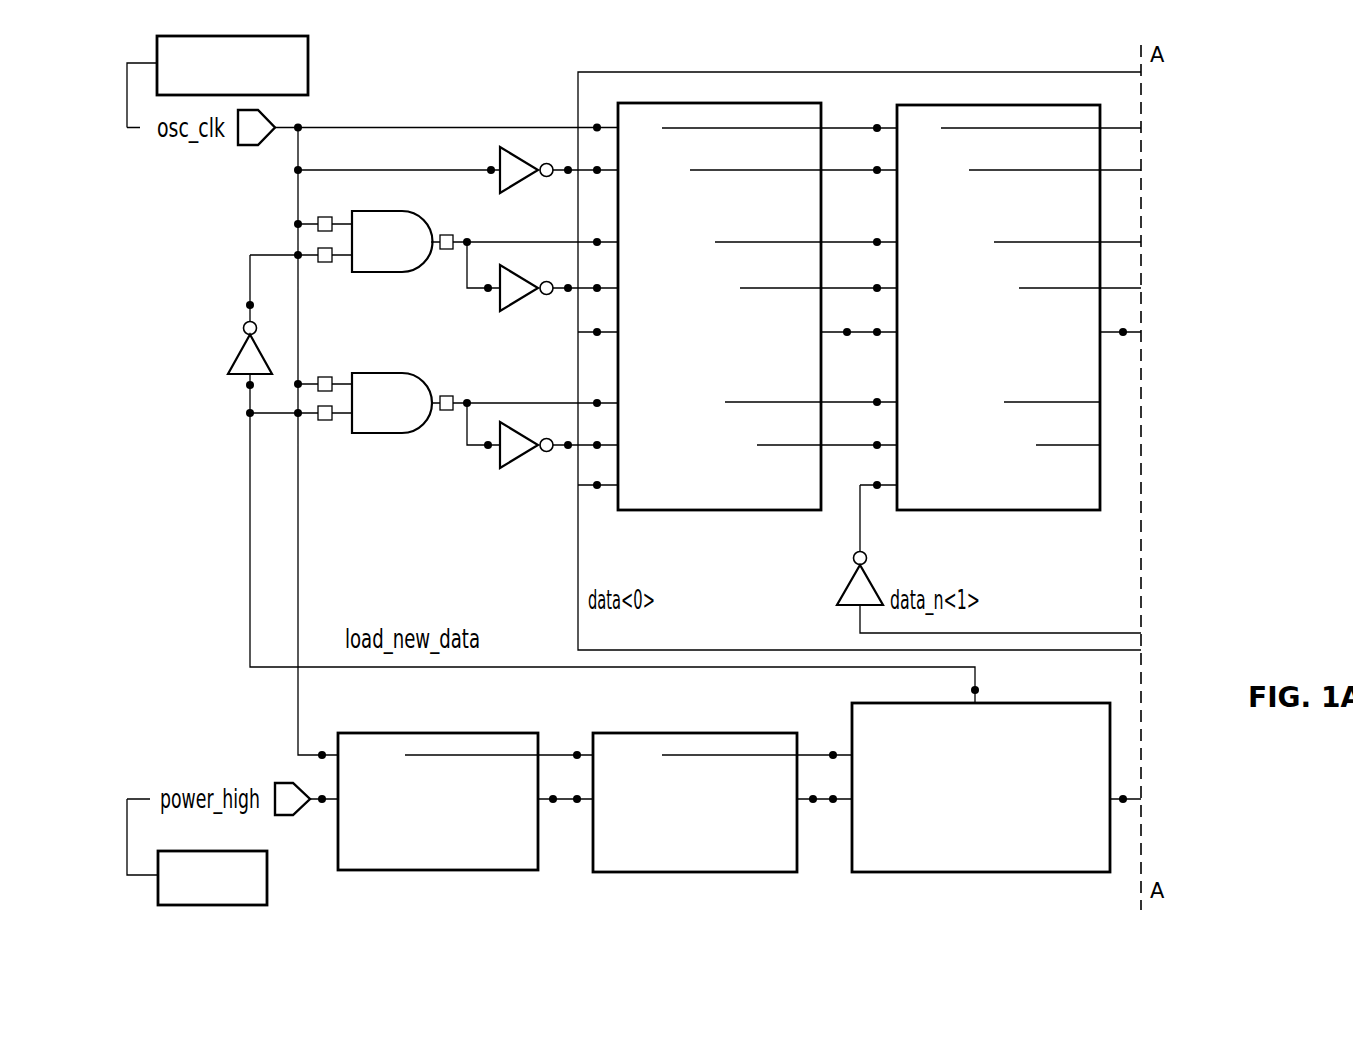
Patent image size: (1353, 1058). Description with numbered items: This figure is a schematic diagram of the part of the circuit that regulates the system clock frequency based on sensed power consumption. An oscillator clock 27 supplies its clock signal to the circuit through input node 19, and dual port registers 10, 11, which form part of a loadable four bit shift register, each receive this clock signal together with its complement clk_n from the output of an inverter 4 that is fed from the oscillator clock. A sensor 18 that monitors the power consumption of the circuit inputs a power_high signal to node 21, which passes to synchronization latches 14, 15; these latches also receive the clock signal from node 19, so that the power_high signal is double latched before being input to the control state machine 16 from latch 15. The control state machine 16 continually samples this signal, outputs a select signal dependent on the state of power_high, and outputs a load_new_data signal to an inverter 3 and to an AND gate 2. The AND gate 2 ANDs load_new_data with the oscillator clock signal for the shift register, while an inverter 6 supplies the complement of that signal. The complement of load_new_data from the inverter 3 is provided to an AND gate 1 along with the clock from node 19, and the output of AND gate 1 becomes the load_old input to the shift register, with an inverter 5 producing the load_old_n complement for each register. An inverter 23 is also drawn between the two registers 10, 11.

The AND gate 1 is at (385, 241).
The AND gate 2 is at (385, 403).
The inverter 3 is at (262, 356).
The inverter 4 is at (518, 186).
The inverter 5 is at (518, 304).
The inverter 6 is at (518, 461).
The dual port register 10 is at (719, 330).
The dual port register 11 is at (998, 331).
The synchronization latch 14 is at (513, 733).
The synchronization latch 15 is at (768, 733).
The control state machine 16 is at (1043, 703).
The sensor 18 is at (268, 873).
The oscillator clock input node 19 is at (246, 147).
The power_high node 21 is at (295, 783).
The inverter 23 is at (837, 593).
The oscillator clock 27 is at (308, 72).